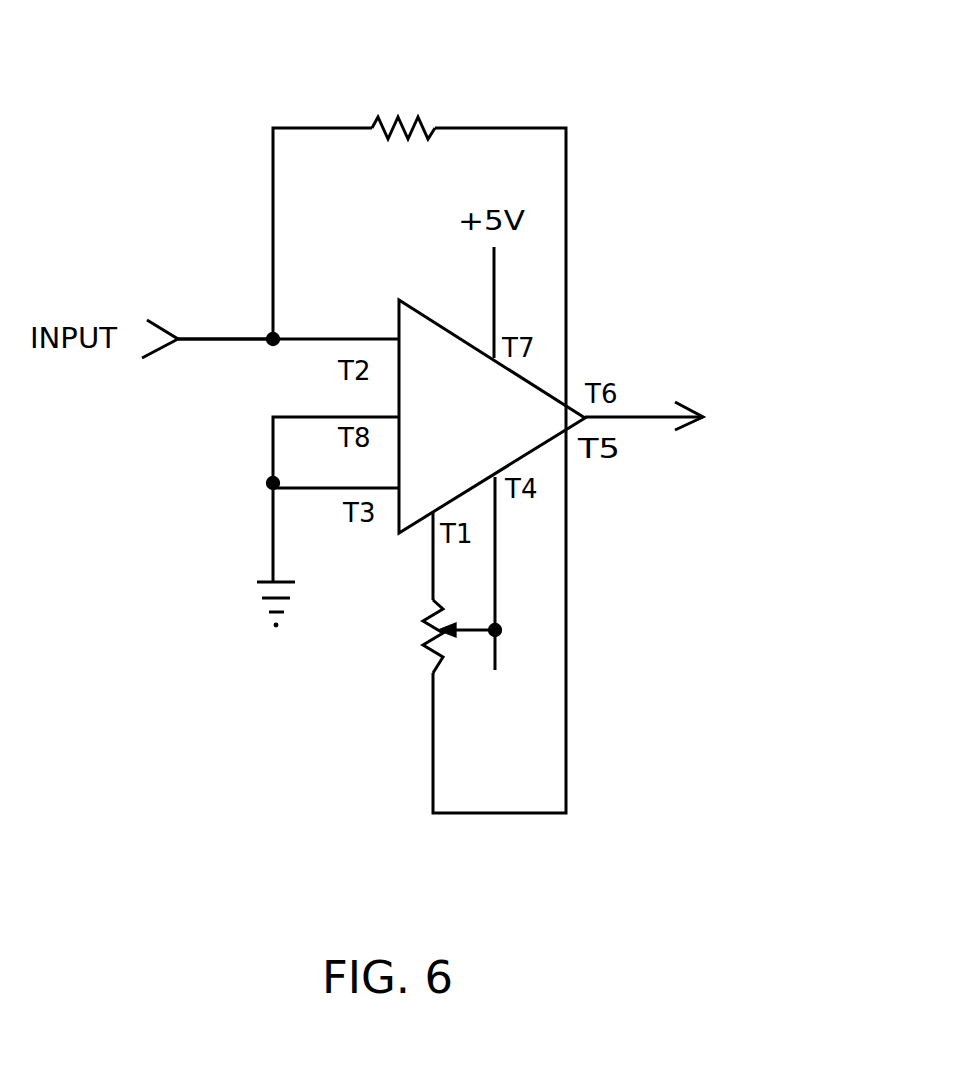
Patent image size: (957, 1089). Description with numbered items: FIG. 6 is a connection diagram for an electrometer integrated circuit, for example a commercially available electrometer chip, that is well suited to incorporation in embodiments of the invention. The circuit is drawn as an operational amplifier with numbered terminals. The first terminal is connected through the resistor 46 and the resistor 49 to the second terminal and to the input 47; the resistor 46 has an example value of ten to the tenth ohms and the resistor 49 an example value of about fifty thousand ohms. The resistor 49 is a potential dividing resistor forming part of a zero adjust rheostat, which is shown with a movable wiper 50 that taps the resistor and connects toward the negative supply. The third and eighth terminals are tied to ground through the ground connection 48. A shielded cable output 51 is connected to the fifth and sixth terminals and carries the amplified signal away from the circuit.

The resistor 46 is at (404, 118).
The input 47 is at (225, 335).
The ground connection 48 is at (273, 533).
The resistor 49 is at (436, 630).
The potentiometer wiper 50 is at (470, 633).
The shielded cable output 51 is at (660, 417).